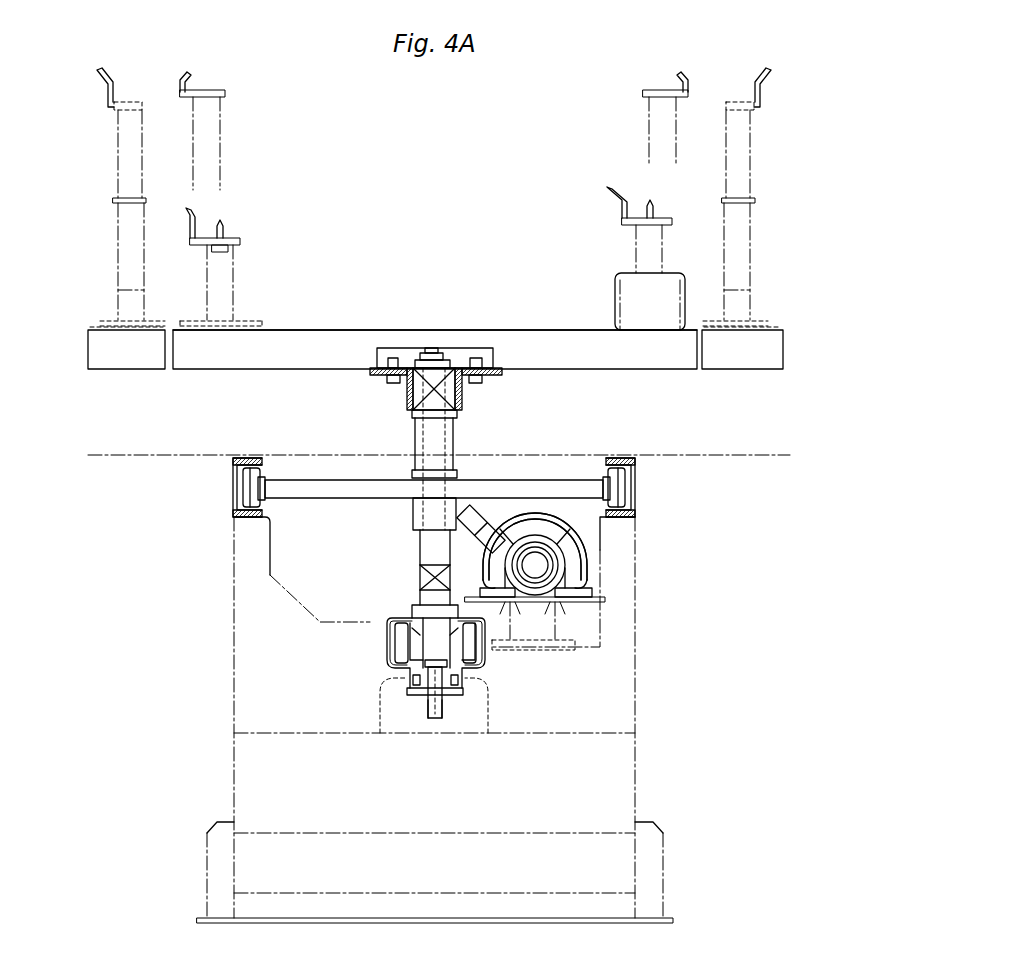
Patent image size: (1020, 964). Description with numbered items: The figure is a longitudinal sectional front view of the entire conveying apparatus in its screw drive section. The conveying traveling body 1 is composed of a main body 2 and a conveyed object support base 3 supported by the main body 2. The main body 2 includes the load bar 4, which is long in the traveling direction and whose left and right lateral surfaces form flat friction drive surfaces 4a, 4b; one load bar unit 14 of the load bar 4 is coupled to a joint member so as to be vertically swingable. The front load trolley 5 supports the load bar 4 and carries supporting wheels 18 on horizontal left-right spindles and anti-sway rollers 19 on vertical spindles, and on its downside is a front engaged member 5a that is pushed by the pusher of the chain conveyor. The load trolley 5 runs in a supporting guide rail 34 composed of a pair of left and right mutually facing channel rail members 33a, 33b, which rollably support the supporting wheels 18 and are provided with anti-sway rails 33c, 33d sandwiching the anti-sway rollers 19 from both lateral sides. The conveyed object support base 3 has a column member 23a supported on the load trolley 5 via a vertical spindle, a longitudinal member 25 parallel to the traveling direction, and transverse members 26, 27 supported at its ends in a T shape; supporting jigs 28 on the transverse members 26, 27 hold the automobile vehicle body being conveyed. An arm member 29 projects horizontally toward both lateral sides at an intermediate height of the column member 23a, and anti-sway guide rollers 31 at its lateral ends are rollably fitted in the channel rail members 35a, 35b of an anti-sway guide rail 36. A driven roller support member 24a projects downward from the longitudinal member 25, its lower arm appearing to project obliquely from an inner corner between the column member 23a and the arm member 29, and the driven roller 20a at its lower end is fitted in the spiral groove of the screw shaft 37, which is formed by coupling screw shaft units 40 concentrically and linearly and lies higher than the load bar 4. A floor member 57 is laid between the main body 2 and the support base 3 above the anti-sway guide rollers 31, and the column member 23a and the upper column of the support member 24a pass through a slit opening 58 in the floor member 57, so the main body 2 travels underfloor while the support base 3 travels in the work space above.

The conveying traveling body 1 is at (408, 318).
The main body 2 is at (405, 592).
The conveyed object support base 3 is at (525, 325).
The load bar 4 is at (455, 582).
The friction drive surface 4a is at (437, 565).
The friction drive surface 4b is at (490, 565).
The load trolley 5 is at (442, 665).
The engaged member 5a is at (435, 718).
The load bar unit 14 is at (428, 530).
The supporting wheels 18 is at (402, 648).
The anti-sway rollers 19 is at (425, 588).
The driven roller 20a is at (505, 515).
The column member 23a is at (430, 450).
The driven roller support member 24a is at (490, 500).
The longitudinal member 25 is at (440, 368).
The transverse member 26 is at (350, 343).
The transverse member 27 is at (108, 345).
The supporting jigs 28 is at (206, 90).
The arm member 29 is at (320, 482).
The anti-sway guide rollers 31 is at (250, 487).
The channel rail member 33a is at (388, 638).
The channel rail member 33b is at (470, 640).
The anti-sway rail 33c is at (425, 612).
The anti-sway rail 33d is at (462, 608).
The supporting guide rail 34 is at (395, 672).
The channel rail member 35a is at (235, 505).
The channel rail member 35b is at (630, 505).
The anti-sway guide rail 36 is at (617, 455).
The screw shaft 37 is at (570, 510).
The screw shaft unit 40 is at (592, 560).
The floor member 57 is at (185, 452).
The slit opening 58 is at (460, 455).